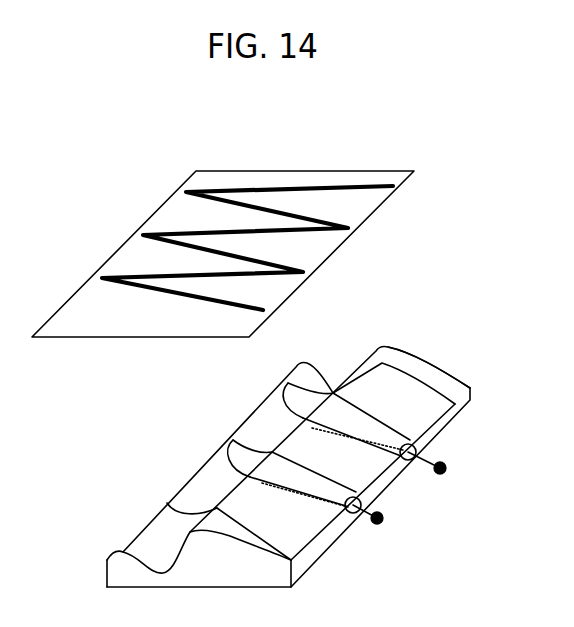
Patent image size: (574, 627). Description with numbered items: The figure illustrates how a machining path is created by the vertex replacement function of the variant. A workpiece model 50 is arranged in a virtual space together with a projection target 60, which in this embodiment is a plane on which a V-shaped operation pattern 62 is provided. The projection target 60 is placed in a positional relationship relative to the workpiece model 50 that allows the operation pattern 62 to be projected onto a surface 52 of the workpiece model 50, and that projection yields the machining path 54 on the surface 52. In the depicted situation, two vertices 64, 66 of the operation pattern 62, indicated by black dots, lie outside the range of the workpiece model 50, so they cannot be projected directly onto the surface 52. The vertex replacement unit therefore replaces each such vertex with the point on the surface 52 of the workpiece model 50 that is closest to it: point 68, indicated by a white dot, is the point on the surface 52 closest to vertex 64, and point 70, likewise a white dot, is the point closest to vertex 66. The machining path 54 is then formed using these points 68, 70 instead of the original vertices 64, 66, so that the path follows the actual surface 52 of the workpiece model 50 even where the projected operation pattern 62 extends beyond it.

The workpiece model 50 is at (317, 427).
The surface of the workpiece model 52 is at (152, 538).
The machining path 54 is at (450, 373).
The projection target 60 is at (223, 170).
The operation pattern 62 is at (335, 184).
The vertex 64 is at (446, 466).
The vertex 66 is at (383, 516).
The point 68 is at (414, 446).
The point 70 is at (360, 497).